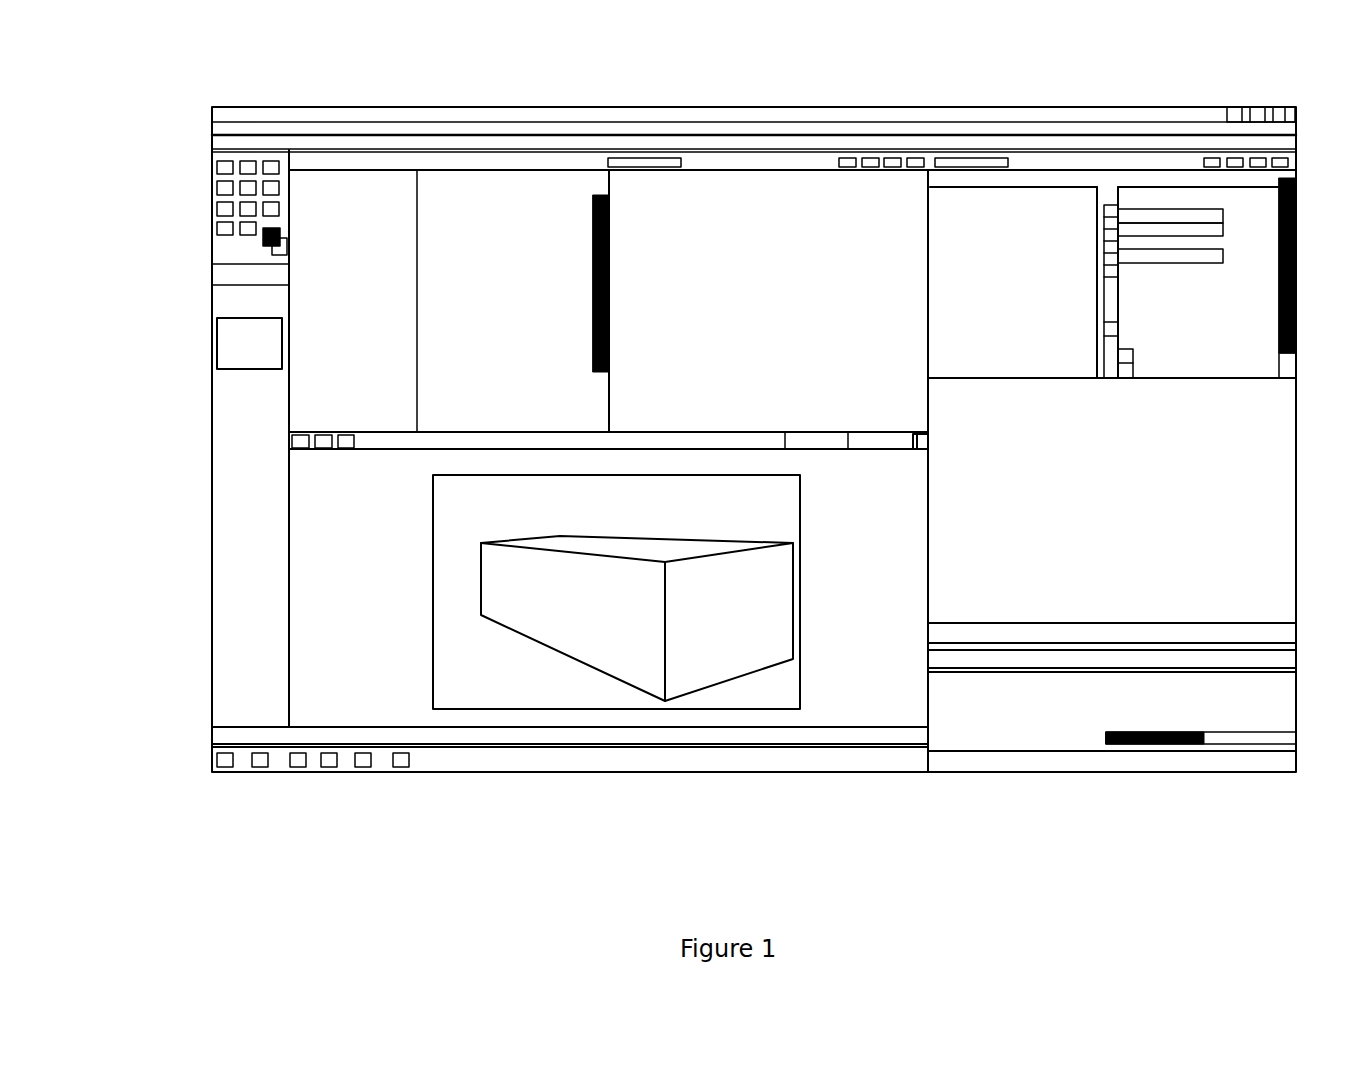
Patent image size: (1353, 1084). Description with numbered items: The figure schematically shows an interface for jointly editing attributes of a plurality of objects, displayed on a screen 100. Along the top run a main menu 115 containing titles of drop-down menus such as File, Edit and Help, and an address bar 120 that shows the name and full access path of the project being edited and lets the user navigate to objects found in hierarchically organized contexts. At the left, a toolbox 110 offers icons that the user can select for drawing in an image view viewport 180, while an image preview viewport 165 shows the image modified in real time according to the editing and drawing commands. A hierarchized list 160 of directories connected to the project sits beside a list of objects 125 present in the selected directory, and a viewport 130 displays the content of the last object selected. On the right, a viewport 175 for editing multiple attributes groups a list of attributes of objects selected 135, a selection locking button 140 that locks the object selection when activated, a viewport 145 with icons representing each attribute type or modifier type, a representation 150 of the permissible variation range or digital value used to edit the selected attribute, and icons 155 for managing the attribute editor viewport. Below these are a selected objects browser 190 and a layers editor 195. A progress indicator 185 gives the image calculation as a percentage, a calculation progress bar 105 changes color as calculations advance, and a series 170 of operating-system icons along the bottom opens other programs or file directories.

The screen 100 is at (164, 109).
The calculation progress bar 105 is at (1180, 745).
The toolbox 110 is at (240, 165).
The main menu 115 is at (376, 133).
The address bar 120 is at (492, 148).
The list of objects 125 is at (535, 188).
The viewport 130 is at (722, 178).
The list of attributes of objects selected 135 is at (960, 212).
The selection locking button 140 is at (993, 160).
The viewport for graphically representing the type of attribute 145 is at (1108, 215).
The representation of the permissible variation range 150 is at (1182, 212).
The icons for managing the attribute editor viewport 155 is at (1255, 160).
The hierarchized list of directories 160 is at (304, 316).
The image preview viewport 165 is at (234, 345).
The series of icons 170 is at (254, 756).
The viewport for editing multiple attributes 175 is at (1252, 300).
The image view viewport 180 is at (408, 690).
The progress indicator 185 is at (898, 437).
The selected objects browser 190 is at (1024, 577).
The layers editor 195 is at (1075, 713).